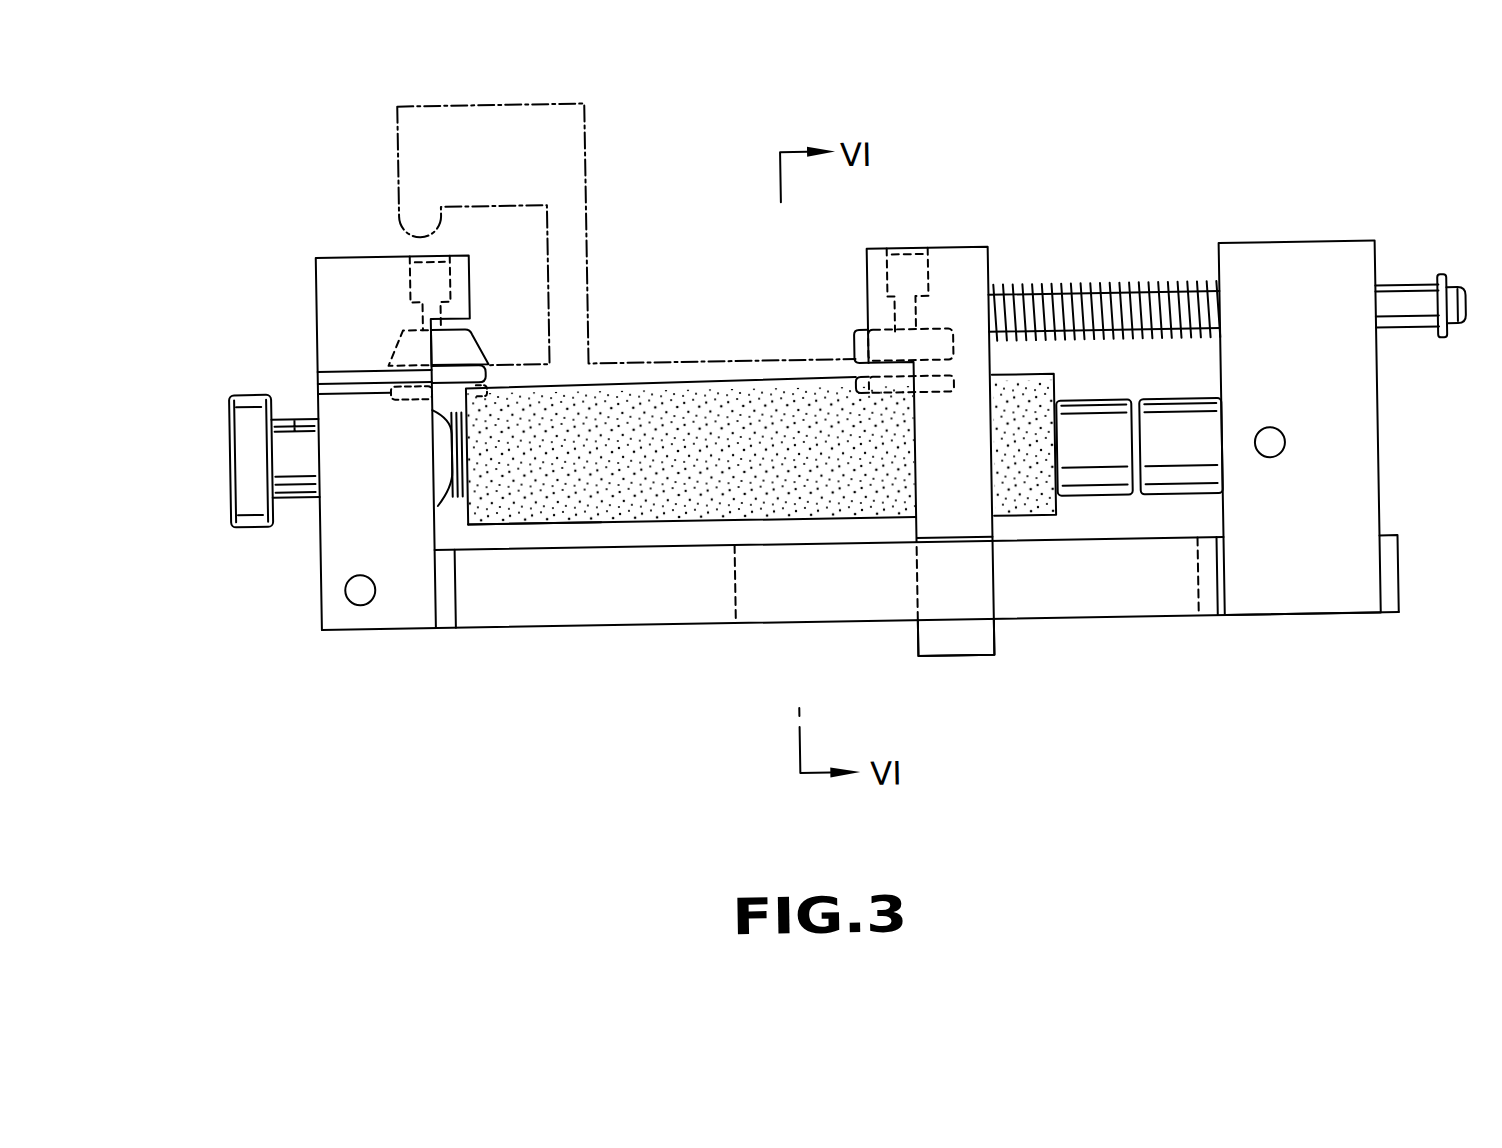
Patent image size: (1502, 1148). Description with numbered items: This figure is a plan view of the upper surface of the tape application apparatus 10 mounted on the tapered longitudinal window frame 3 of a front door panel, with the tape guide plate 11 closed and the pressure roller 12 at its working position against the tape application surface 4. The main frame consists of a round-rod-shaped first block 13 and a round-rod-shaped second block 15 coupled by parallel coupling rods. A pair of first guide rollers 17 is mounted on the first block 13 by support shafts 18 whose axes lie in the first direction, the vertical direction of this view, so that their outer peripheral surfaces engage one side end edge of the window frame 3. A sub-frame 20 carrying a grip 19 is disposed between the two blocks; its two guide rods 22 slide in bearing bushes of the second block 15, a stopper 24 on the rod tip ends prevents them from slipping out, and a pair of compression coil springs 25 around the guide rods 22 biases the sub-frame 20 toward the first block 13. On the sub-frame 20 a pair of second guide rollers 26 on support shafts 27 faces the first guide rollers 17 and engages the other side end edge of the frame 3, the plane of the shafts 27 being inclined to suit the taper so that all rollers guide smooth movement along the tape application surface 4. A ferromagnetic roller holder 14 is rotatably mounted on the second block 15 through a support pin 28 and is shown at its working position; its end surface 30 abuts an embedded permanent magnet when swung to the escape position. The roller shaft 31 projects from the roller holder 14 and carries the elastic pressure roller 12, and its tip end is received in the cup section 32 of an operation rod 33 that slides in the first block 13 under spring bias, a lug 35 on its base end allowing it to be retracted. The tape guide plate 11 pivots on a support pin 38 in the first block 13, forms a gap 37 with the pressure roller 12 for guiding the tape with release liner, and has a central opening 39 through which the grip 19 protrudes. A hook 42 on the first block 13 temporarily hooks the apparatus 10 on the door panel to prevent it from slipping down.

The longitudinal window frame 3 is at (560, 153).
The tape application surface 4 is at (637, 389).
The tape application apparatus 10 is at (624, 687).
The tape guide plate 11 is at (573, 601).
The pressure roller 12 is at (868, 521).
The first block 13 is at (343, 517).
The roller holder 14 is at (1170, 431).
The second block 15 is at (1280, 278).
The first guide rollers 17 is at (470, 347).
The support shafts 18 is at (433, 287).
The grip 19 is at (962, 643).
The sub-frame 20 is at (968, 265).
The guide rods 22 is at (1403, 308).
The stopper 24 is at (1444, 342).
The compression coil springs 25 is at (1100, 285).
The second guide rollers 26 is at (858, 341).
The support shafts 27 is at (905, 259).
The support pin 28 is at (1282, 460).
The end surface 30 is at (1167, 510).
The roller shaft 31 is at (460, 447).
The cup section 32 is at (437, 462).
The operation rod 33 is at (295, 421).
The lug 35 is at (243, 431).
The gap 37 is at (697, 531).
The support pin 38 is at (357, 598).
The opening 39 is at (733, 569).
The hook 42 is at (360, 362).